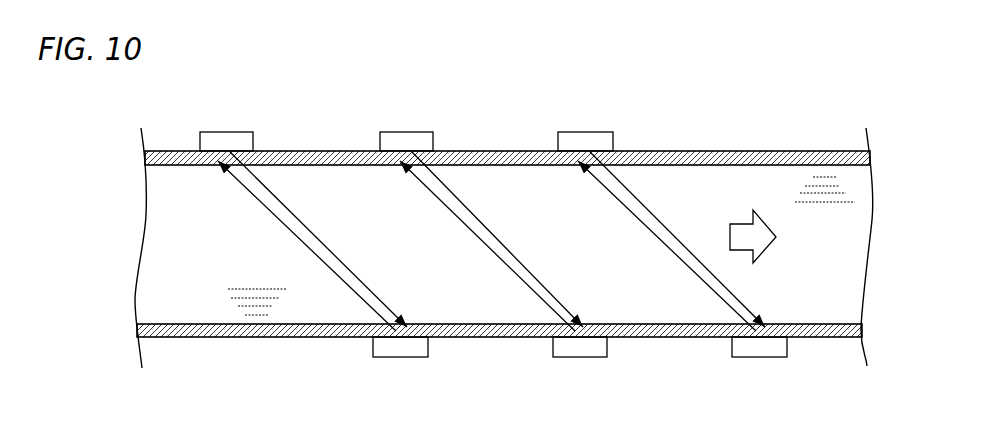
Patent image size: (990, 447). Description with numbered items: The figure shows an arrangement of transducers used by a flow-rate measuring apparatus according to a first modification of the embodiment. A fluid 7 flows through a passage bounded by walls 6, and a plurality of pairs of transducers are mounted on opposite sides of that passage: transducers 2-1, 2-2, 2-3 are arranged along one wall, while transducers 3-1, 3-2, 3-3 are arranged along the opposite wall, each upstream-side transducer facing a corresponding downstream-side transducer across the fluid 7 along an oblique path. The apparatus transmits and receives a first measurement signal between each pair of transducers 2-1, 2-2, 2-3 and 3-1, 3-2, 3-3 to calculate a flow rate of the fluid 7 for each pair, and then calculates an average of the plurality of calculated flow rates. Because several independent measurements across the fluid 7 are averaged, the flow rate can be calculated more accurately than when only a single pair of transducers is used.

The transducer 2-1 is at (200, 143).
The transducer 2-2 is at (380, 143).
The transducer 2-3 is at (558, 143).
The transducer 3-1 is at (428, 350).
The transducer 3-2 is at (607, 350).
The transducer 3-3 is at (787, 350).
The pipe wall 6 is at (703, 151).
The fluid 7 is at (830, 249).